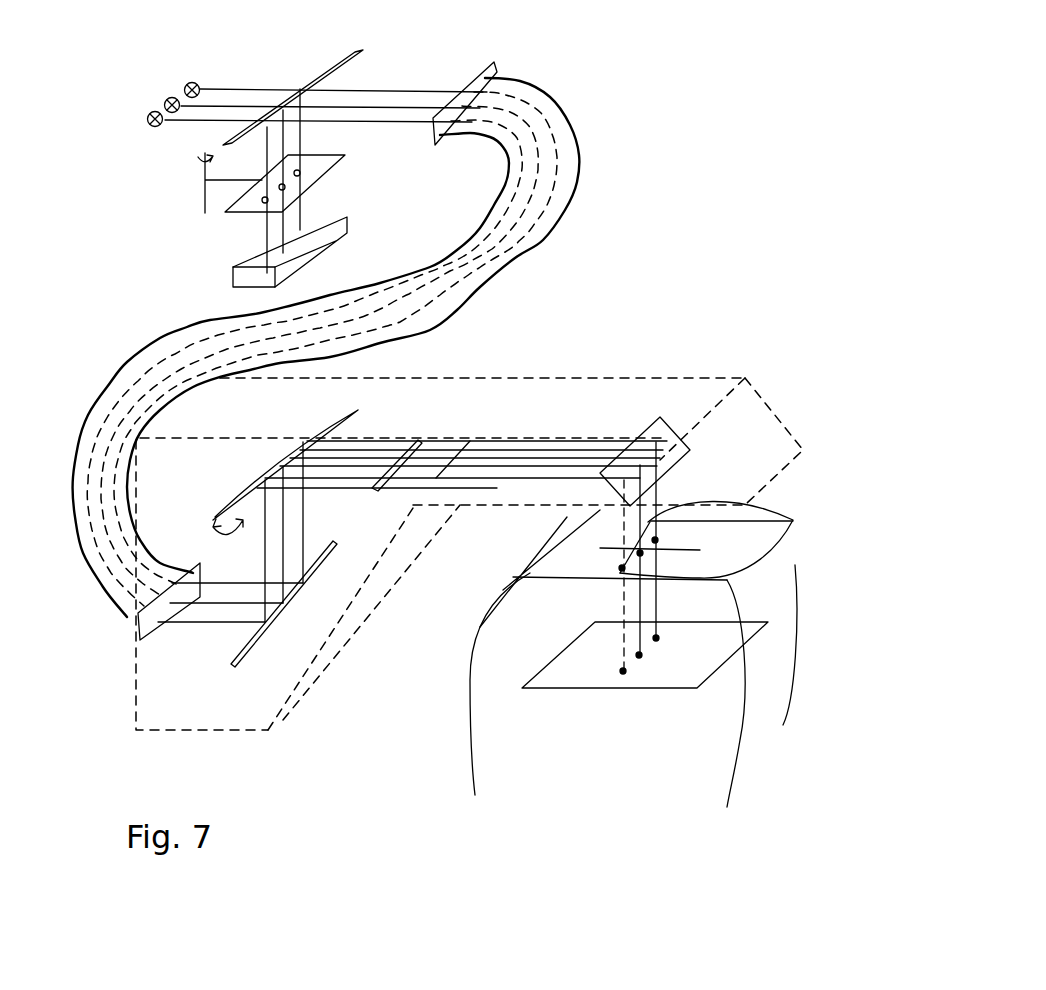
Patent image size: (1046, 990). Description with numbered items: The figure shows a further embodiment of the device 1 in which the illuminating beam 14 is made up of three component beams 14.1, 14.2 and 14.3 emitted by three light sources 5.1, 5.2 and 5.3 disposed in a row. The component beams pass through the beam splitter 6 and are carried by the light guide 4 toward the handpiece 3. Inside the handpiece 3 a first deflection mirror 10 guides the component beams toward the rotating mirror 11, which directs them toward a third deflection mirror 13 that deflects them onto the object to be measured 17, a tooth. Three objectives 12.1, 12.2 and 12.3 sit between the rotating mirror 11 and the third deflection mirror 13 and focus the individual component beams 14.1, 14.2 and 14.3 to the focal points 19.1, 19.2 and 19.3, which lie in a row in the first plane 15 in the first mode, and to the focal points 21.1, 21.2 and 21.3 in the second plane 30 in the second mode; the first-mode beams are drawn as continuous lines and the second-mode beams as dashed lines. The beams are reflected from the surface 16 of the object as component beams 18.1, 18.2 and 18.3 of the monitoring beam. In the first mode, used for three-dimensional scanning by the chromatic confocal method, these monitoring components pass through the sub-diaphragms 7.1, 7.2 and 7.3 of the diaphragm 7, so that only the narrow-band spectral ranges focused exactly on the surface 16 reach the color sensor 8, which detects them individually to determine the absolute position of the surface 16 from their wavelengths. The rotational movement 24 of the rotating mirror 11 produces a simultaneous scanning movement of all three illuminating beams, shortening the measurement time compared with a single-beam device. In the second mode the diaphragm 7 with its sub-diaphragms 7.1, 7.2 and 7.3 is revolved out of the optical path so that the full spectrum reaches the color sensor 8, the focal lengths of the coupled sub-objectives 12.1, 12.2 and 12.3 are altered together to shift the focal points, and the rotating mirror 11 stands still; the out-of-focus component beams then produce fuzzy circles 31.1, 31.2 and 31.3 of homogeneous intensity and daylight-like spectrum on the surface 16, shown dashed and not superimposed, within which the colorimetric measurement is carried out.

The device 1 is at (612, 251).
The handpiece 3 is at (590, 376).
The light guide 4 is at (567, 163).
The light source 5.1 is at (148, 113).
The light source 5.2 is at (184, 82).
The light source 5.3 is at (200, 80).
The beam splitter 6 is at (340, 58).
The diaphragm 7 is at (225, 214).
The sub-diaphragm 7.1 is at (268, 200).
The sub-diaphragm 7.2 is at (285, 187).
The sub-diaphragm 7.3 is at (300, 173).
The color sensor 8 is at (320, 238).
The first deflection mirror 10 is at (239, 659).
The rotating mirror 11 is at (237, 498).
The objective 12.1 is at (361, 489).
The objective 12.2 is at (407, 462).
The objective 12.3 is at (437, 441).
The third deflection mirror 13 is at (668, 417).
The illuminating beam 14 is at (420, 328).
The component beam 14.1 is at (362, 371).
The component beam 14.2 is at (224, 105).
The component beam 14.3 is at (264, 89).
The first plane 15 is at (521, 551).
The surface of the object to be measured 16 is at (763, 503).
The object to be measured 17 is at (501, 735).
The component beam of the monitoring beam 18.1 is at (263, 151).
The component beam of the monitoring beam 18.2 is at (290, 128).
The component beam of the monitoring beam 18.3 is at (302, 145).
The focal point 19.1 is at (620, 566).
The focal point 19.2 is at (644, 553).
The focal point 19.3 is at (659, 539).
The focal point 21.1 is at (624, 675).
The focal point 21.2 is at (642, 656).
The focal point 21.3 is at (659, 635).
The rotational movement 24 is at (208, 531).
The second plane 30 is at (501, 672).
The fuzzy circle 31.1 is at (616, 579).
The fuzzy circle 31.2 is at (646, 571).
The fuzzy circle 31.3 is at (768, 520).